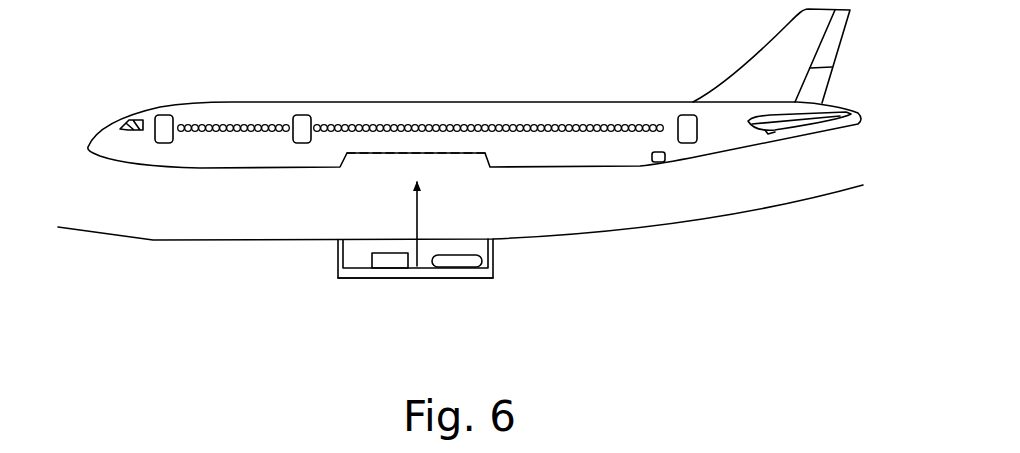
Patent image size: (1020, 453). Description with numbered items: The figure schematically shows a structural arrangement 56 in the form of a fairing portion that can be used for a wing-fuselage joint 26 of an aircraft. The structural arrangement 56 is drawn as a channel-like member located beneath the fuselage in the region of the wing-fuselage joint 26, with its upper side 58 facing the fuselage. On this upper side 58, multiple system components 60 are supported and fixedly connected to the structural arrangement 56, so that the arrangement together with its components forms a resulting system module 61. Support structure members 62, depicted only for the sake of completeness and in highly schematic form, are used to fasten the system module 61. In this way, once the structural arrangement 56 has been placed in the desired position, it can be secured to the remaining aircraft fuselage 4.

The aircraft fuselage 4 is at (228, 112).
The wing-fuselage joint 26 is at (437, 150).
The structural arrangement 56 is at (415, 280).
The upper side 58 is at (425, 258).
The system components 60 is at (388, 253).
The system module 61 is at (323, 262).
The support structure members 62 is at (494, 258).